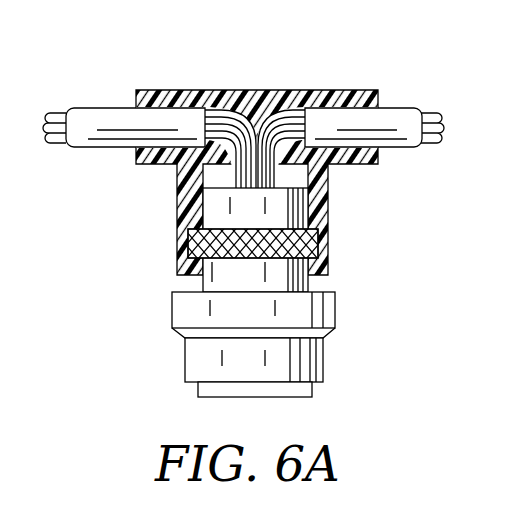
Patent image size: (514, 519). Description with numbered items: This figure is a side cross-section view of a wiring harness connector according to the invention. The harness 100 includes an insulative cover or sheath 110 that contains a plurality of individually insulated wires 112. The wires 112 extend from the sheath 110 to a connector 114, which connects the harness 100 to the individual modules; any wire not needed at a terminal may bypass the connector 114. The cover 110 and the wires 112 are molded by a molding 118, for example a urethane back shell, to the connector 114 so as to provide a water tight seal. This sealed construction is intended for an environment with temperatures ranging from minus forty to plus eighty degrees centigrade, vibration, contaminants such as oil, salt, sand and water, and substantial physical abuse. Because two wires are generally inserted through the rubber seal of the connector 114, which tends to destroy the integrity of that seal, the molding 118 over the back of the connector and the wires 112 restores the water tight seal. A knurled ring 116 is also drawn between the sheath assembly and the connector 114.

The harness 100 is at (257, 201).
The insulative cover or sheath 110 is at (400, 115).
The individually insulated wires 112 is at (262, 116).
The connector 114 is at (312, 310).
The knurled ring 116 is at (328, 239).
The molding 118 is at (330, 204).